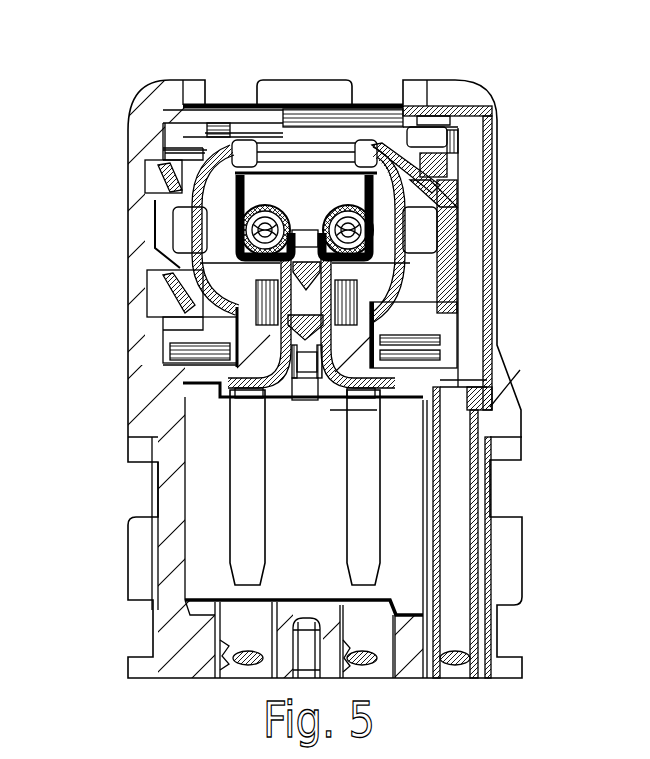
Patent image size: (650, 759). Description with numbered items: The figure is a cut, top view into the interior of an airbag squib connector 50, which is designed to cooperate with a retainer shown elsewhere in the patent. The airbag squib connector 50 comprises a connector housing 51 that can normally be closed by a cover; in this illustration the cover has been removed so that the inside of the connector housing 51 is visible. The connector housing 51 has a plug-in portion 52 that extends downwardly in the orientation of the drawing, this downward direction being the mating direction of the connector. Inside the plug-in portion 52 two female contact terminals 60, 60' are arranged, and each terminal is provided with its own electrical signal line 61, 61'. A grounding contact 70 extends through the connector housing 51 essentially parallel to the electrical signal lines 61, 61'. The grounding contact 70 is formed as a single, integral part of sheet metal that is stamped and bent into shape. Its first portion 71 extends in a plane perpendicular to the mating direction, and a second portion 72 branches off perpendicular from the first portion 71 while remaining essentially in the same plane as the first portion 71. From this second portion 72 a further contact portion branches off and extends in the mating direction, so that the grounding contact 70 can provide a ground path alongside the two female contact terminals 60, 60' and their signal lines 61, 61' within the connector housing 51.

The airbag squib connector 50 is at (114, 224).
The connector housing 51 is at (237, 367).
The plug-in portion 52 is at (440, 203).
The female contact terminal 60 is at (219, 136).
The female contact terminal 60' is at (304, 136).
The electrical signal line 61 is at (144, 487).
The electrical signal line 61' is at (202, 487).
The grounding contact 70 is at (483, 500).
The first portion 71 is at (473, 287).
The second portion 72 is at (433, 113).